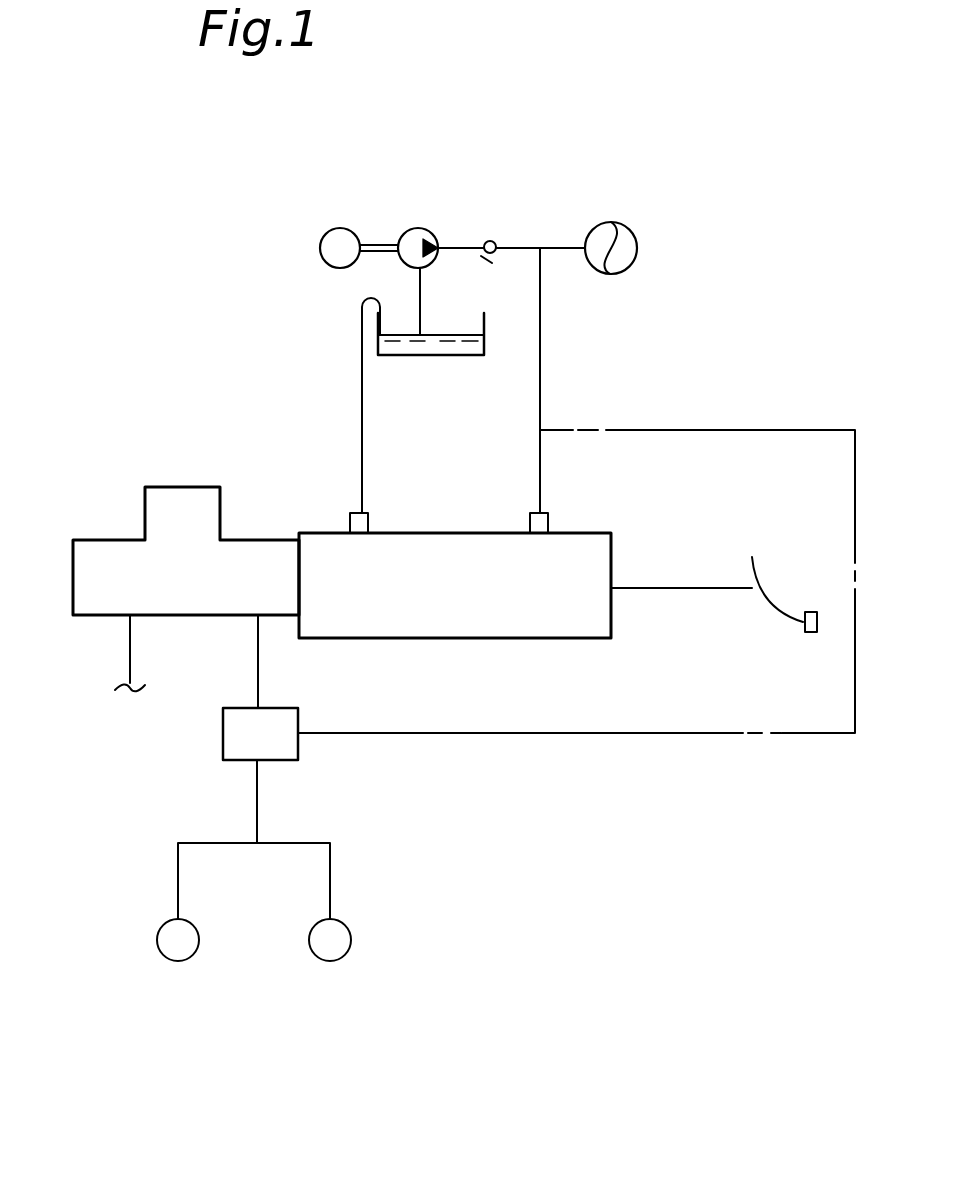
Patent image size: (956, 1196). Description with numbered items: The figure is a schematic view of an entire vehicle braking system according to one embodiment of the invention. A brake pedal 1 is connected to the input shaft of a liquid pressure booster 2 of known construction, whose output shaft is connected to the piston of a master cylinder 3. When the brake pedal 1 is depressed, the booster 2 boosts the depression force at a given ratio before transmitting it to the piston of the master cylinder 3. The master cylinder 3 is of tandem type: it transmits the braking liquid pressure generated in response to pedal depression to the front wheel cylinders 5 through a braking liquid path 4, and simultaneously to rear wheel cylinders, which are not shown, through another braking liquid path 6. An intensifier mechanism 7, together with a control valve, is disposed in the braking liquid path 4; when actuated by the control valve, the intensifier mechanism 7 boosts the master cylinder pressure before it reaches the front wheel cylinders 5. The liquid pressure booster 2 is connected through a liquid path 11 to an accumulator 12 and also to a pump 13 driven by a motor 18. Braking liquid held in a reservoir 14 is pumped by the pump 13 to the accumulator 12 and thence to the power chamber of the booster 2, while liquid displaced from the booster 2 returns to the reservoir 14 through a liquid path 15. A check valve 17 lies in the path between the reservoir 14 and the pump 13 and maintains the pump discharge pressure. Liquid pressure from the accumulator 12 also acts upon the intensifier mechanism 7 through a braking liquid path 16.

The brake pedal 1 is at (805, 620).
The liquid pressure booster 2 is at (518, 612).
The master cylinder 3 is at (114, 553).
The braking liquid path 4 is at (258, 668).
The front wheel cylinders 5 is at (183, 952).
The braking liquid path 6 is at (130, 657).
The intensifier mechanism 7 is at (283, 748).
The liquid path 11 is at (540, 462).
The accumulator 12 is at (622, 237).
The pump 13 is at (432, 229).
The reservoir 14 is at (440, 355).
The liquid path 15 is at (362, 393).
The braking liquid path 16 is at (688, 735).
The check valve 17 is at (492, 240).
The motor 18 is at (338, 228).